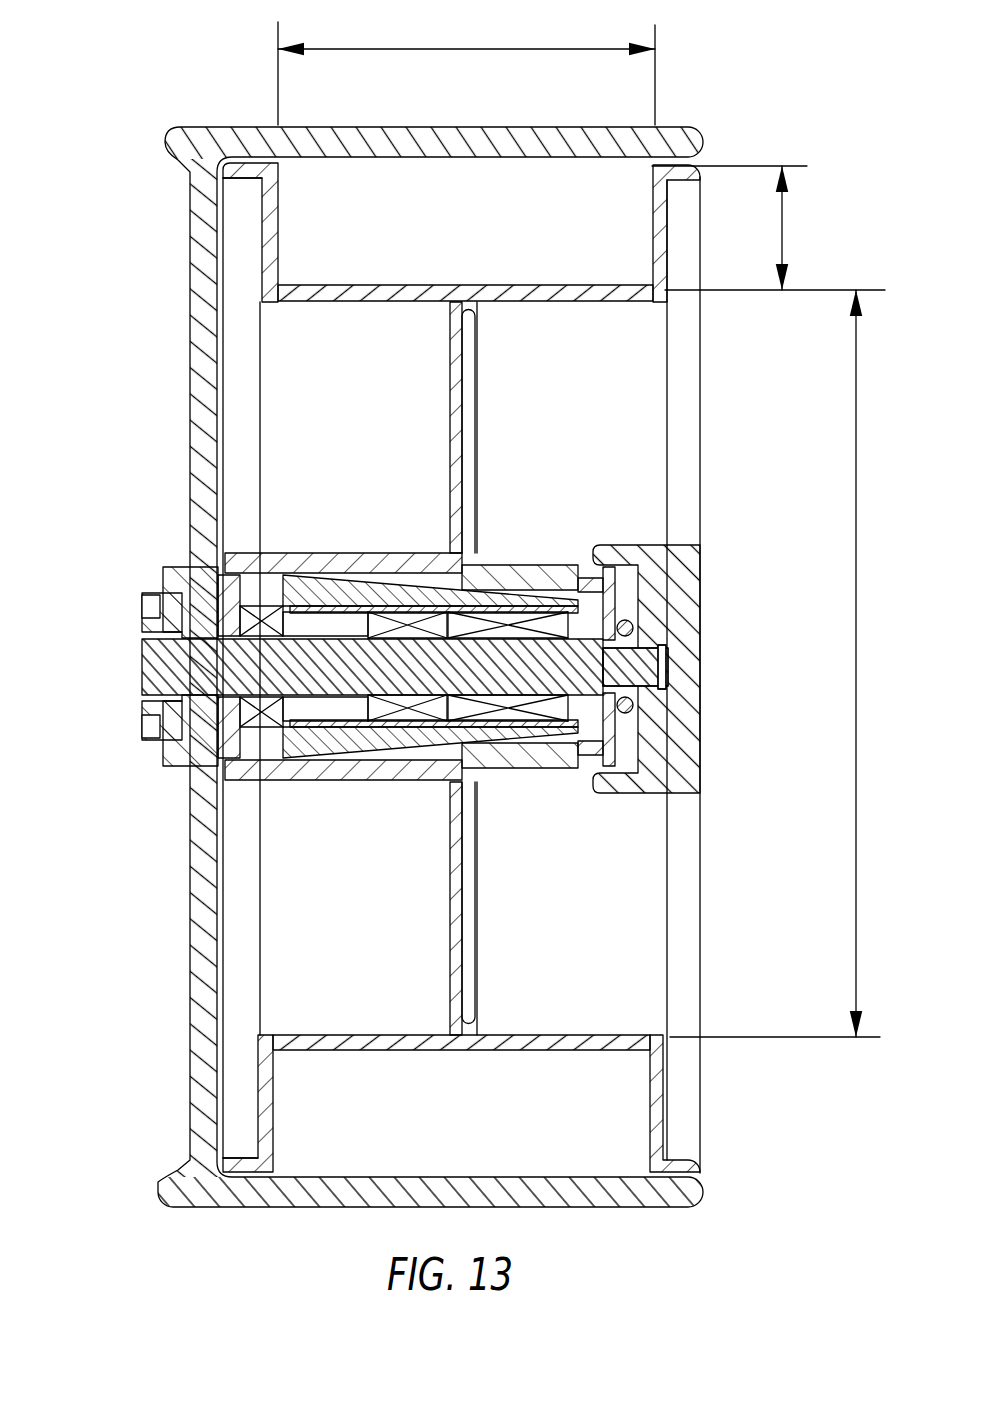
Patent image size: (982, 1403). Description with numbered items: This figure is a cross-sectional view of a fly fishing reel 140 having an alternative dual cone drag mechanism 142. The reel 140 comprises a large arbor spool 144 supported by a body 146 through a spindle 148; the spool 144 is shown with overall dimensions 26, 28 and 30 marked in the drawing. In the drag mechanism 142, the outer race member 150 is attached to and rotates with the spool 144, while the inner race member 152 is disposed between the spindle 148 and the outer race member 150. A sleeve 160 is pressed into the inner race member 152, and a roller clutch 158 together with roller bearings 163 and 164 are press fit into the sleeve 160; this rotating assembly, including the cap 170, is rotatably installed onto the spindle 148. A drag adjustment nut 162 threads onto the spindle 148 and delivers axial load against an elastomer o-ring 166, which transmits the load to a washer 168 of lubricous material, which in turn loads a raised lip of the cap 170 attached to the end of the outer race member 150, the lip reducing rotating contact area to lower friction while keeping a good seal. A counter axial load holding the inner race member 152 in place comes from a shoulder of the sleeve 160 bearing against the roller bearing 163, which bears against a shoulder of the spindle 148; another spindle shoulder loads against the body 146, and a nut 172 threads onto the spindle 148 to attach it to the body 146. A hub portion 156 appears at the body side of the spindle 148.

The fly fishing reel 140 is at (172, 97).
The dual cone drag mechanism 142 is at (290, 808).
The large arbor spool 144 is at (622, 303).
The body 146 is at (200, 290).
The spindle 148 is at (140, 668).
The outer race member 150 is at (420, 548).
The inner race member 152 is at (345, 775).
The left hub 156 is at (155, 582).
The roller clutch 158 is at (410, 752).
The sleeve 160 is at (360, 598).
The drag adjustment nut 162 is at (702, 580).
The roller bearing 163 is at (285, 578).
The roller bearing 164 is at (505, 725).
The elastomer o-ring 166 is at (640, 636).
The washer 168 is at (625, 782).
The cap 170 is at (580, 562).
The nut 172 is at (140, 725).
The diameter dimension 26 is at (855, 822).
The width dimension 28 is at (370, 45).
The depth dimension 30 is at (782, 230).